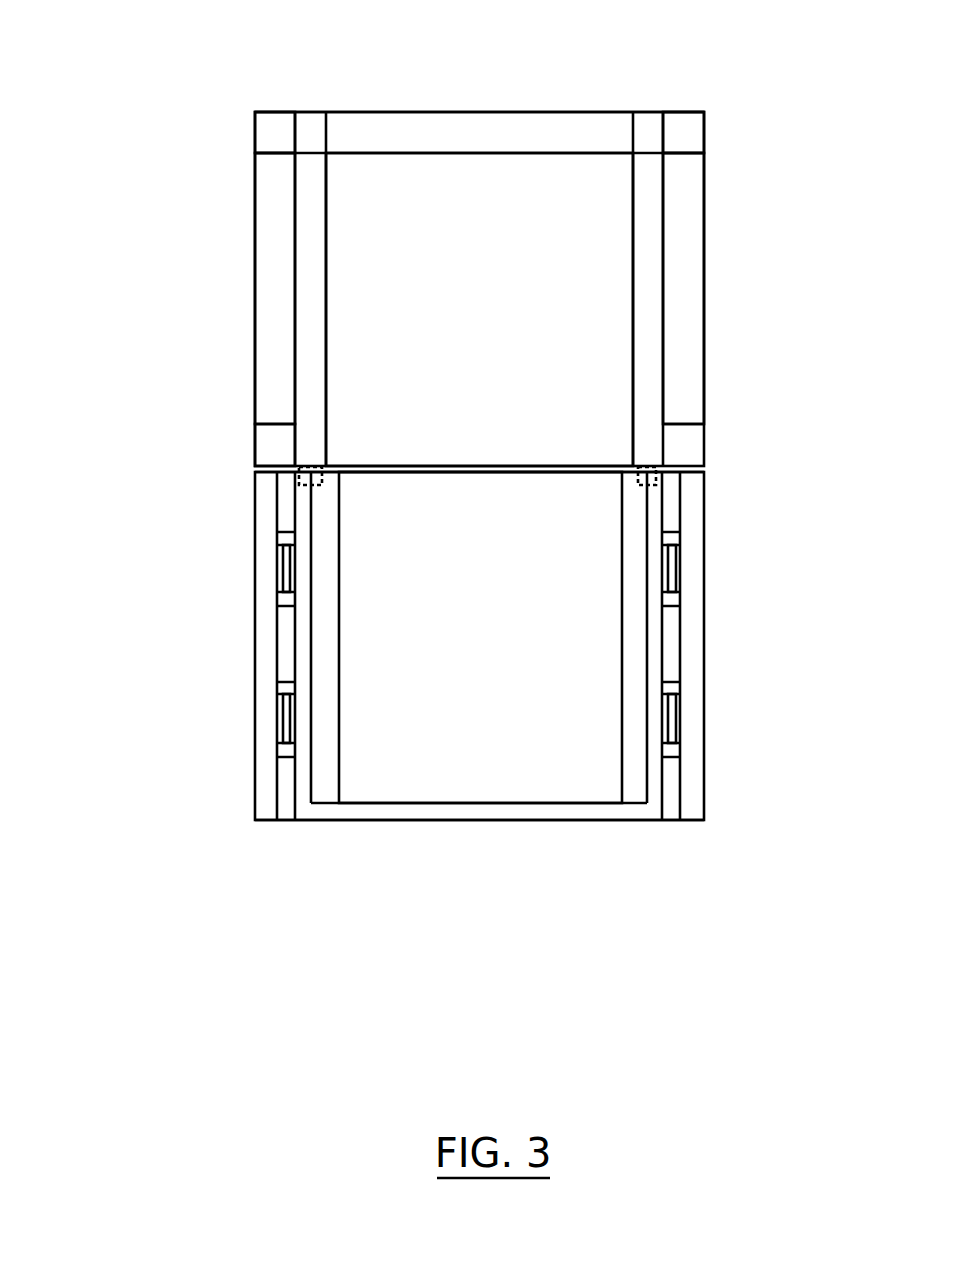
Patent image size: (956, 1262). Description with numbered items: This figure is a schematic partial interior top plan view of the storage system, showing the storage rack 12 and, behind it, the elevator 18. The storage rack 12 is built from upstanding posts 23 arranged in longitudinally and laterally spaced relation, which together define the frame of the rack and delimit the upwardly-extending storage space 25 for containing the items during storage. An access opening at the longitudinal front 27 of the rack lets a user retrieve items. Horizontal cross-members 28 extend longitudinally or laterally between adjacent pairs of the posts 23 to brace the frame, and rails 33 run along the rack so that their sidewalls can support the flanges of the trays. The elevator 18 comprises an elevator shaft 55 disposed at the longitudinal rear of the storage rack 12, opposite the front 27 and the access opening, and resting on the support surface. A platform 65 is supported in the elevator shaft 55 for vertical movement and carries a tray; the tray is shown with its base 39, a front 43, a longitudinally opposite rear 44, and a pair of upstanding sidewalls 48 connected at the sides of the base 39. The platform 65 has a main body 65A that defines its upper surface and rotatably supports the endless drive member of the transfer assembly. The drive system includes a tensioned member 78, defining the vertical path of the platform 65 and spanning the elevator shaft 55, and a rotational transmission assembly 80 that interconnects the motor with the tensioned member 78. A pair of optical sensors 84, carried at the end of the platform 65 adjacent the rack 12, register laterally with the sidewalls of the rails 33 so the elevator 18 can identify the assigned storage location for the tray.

The storage rack 12 is at (160, 280).
The elevator 18 is at (180, 635).
The upstanding posts 23 is at (268, 135).
The storage space 25 is at (479, 163).
The longitudinal front 27 is at (371, 98).
The horizontal cross-members 28 is at (559, 125).
The rails 33 is at (311, 110).
The base 39 is at (398, 782).
The front 43 is at (569, 473).
The rear 44 is at (455, 803).
The upstanding sidewalls 48 is at (327, 797).
The elevator shaft 55 is at (243, 700).
The platform 65 is at (284, 791).
The main body 65A is at (307, 815).
The tensioned member 78 is at (280, 540).
The rotational transmission assembly 80 is at (268, 567).
The optical sensors 84 is at (288, 479).